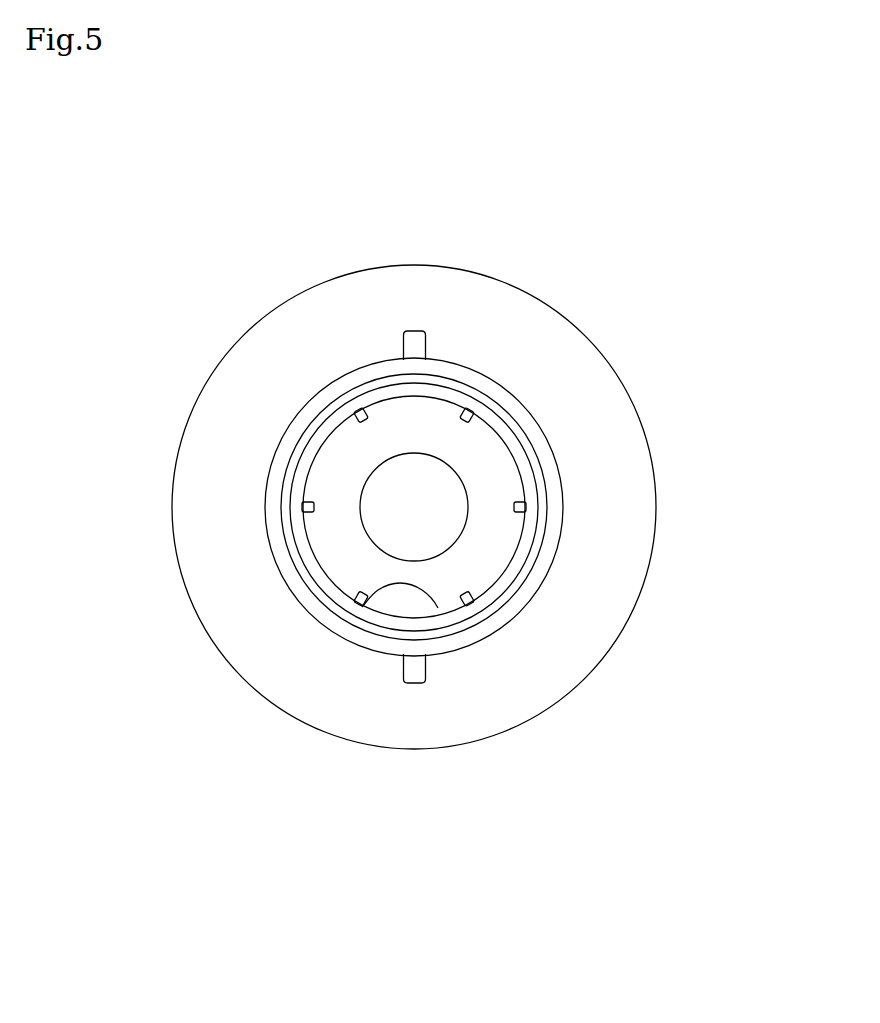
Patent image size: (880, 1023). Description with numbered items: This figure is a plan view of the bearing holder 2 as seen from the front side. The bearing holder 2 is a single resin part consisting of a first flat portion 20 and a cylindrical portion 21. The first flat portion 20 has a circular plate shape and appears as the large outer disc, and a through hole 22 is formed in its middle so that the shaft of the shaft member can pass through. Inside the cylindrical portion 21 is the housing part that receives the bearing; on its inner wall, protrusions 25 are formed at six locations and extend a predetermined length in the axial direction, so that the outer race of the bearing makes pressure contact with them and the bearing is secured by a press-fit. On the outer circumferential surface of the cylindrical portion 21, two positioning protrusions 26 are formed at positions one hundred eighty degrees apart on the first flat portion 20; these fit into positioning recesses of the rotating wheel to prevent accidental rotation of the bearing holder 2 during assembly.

The bearing holder 2 is at (405, 230).
The first flat portion 20 is at (565, 314).
The cylindrical portion 21 is at (562, 477).
The through hole 22 is at (457, 473).
The protrusions 25 is at (438, 608).
The positioning protrusions 26 is at (415, 330).